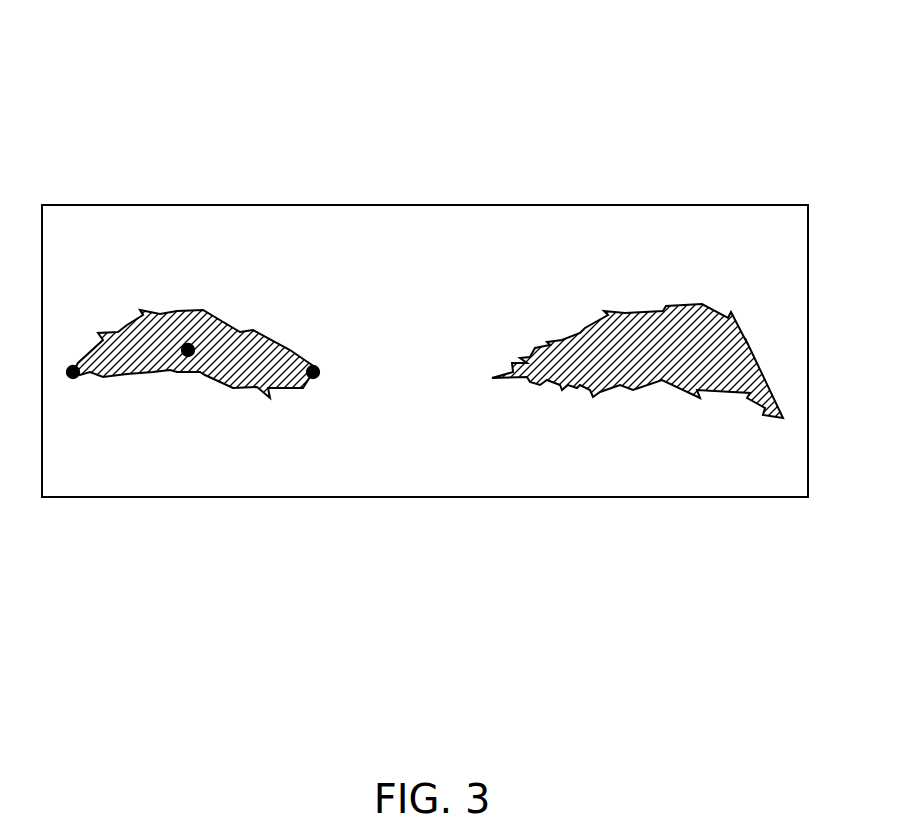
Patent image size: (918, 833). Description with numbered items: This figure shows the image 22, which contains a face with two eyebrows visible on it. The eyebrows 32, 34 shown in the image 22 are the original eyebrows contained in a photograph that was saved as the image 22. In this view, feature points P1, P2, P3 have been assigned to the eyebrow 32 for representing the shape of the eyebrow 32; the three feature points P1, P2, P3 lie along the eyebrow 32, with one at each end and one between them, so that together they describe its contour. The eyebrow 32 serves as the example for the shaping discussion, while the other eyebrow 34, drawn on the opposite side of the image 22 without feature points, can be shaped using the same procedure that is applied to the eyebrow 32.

The image 22 is at (692, 88).
The eyebrow 32 is at (235, 287).
The eyebrow 34 is at (683, 290).
The feature point P1 is at (74, 379).
The feature point P2 is at (189, 357).
The feature point P3 is at (314, 379).